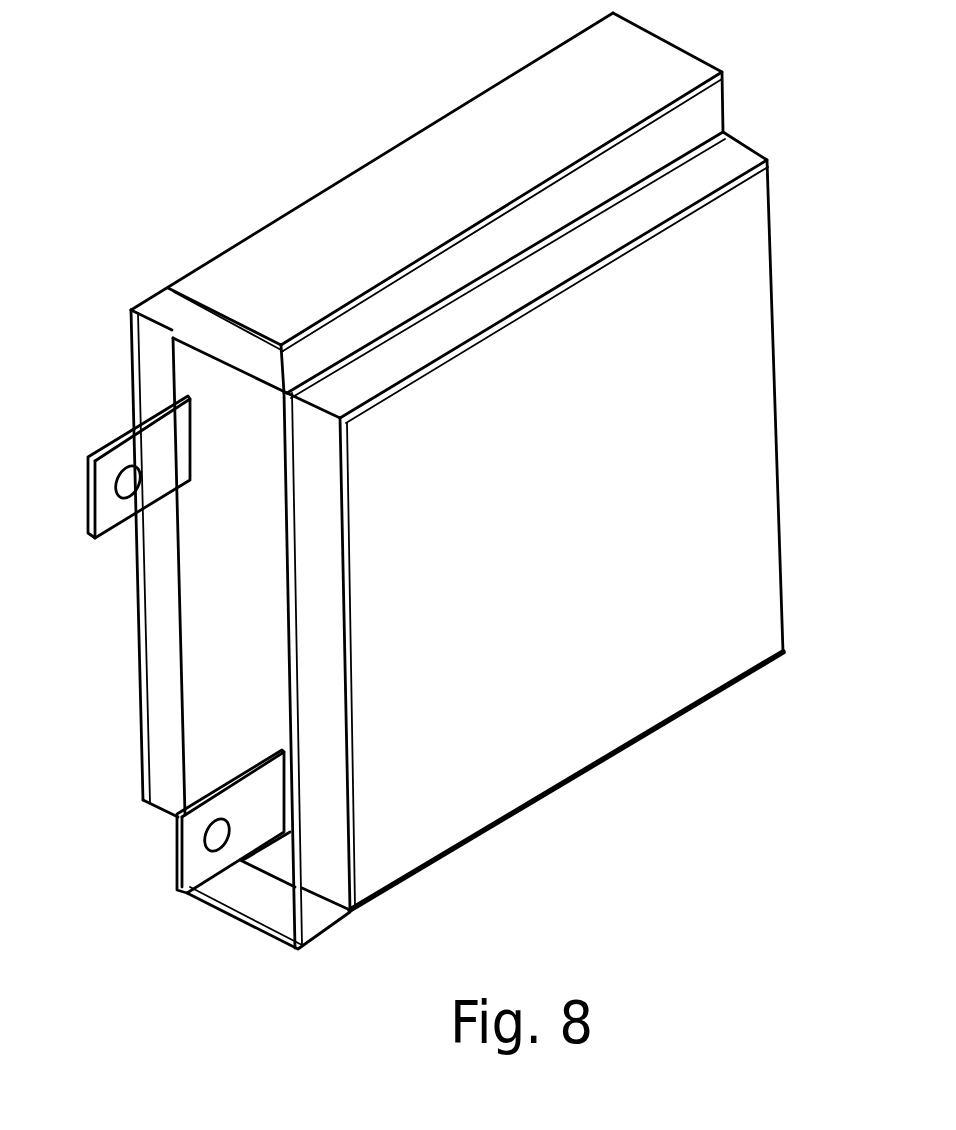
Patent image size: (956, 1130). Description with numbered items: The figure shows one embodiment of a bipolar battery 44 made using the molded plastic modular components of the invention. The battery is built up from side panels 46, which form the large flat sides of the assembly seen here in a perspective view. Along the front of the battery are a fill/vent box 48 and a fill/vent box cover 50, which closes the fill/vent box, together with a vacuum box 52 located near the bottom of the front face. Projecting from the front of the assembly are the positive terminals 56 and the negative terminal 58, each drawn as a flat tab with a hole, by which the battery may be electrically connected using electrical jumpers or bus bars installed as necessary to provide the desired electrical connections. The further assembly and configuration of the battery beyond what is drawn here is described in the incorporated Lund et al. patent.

The bipolar battery 44 is at (471, 512).
The side panels 46 is at (255, 447).
The fill/vent box 48 is at (195, 317).
The fill/vent box cover 50 is at (298, 238).
The vacuum box 52 is at (260, 928).
The positive terminals 56 is at (103, 445).
The negative terminal 58 is at (178, 855).